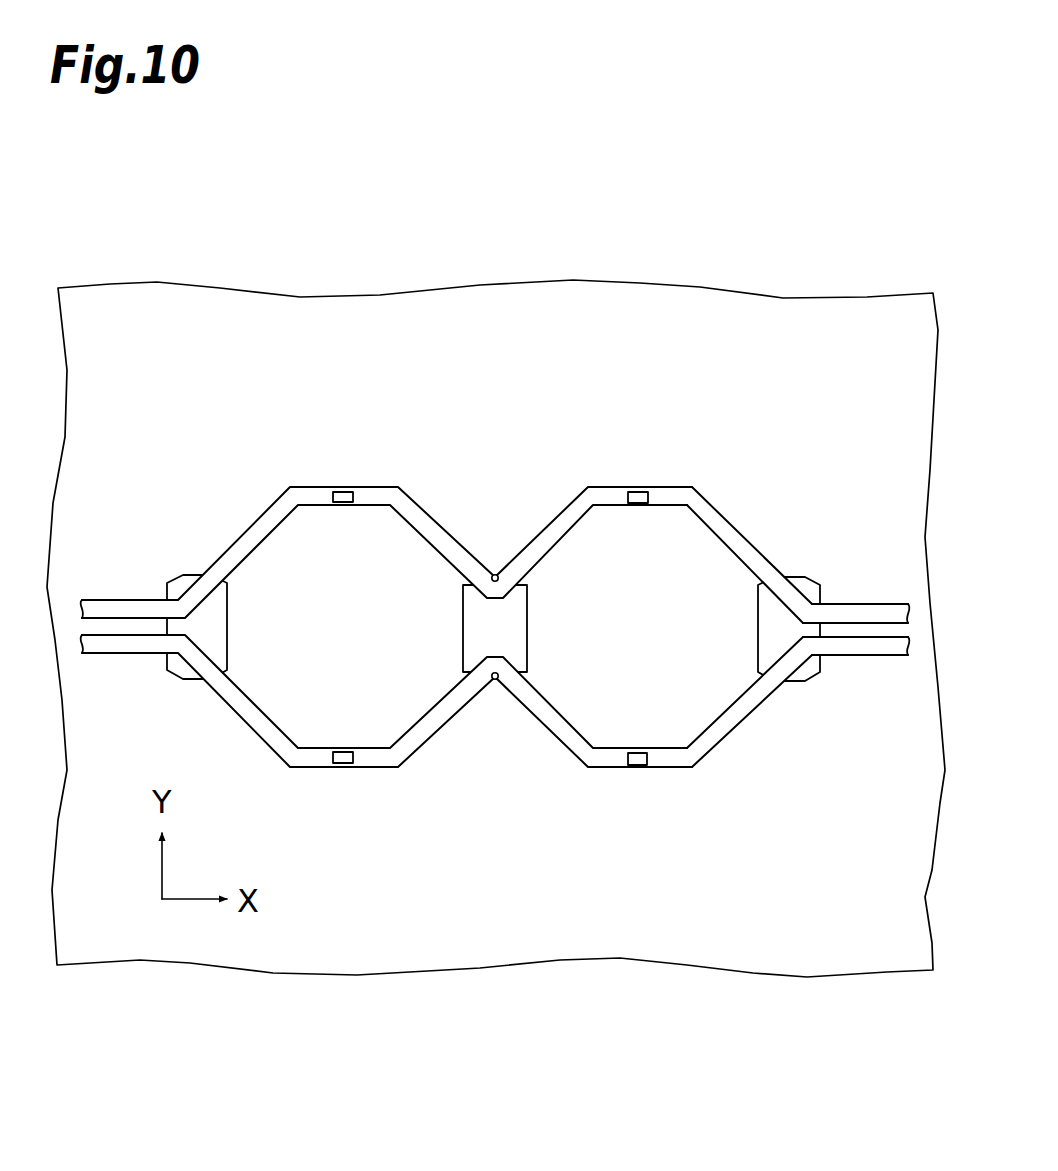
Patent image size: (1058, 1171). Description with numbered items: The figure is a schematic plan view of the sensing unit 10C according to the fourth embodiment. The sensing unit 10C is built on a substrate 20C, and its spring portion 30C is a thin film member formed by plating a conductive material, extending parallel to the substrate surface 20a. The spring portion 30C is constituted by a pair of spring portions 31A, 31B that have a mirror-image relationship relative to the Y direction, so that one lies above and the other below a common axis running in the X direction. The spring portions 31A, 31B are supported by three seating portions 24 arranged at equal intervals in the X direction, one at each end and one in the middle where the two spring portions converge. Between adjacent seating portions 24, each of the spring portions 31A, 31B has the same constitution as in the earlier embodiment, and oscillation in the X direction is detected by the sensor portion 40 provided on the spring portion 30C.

The sensing unit 10C is at (818, 178).
The substrate 20C is at (703, 284).
The substrate surface 20a is at (378, 308).
The seating portion 24 is at (185, 670).
The spring portion 30C is at (776, 519).
The spring portion 31A is at (718, 548).
The spring portion 31B is at (717, 707).
The sensor portion 40 is at (344, 499).